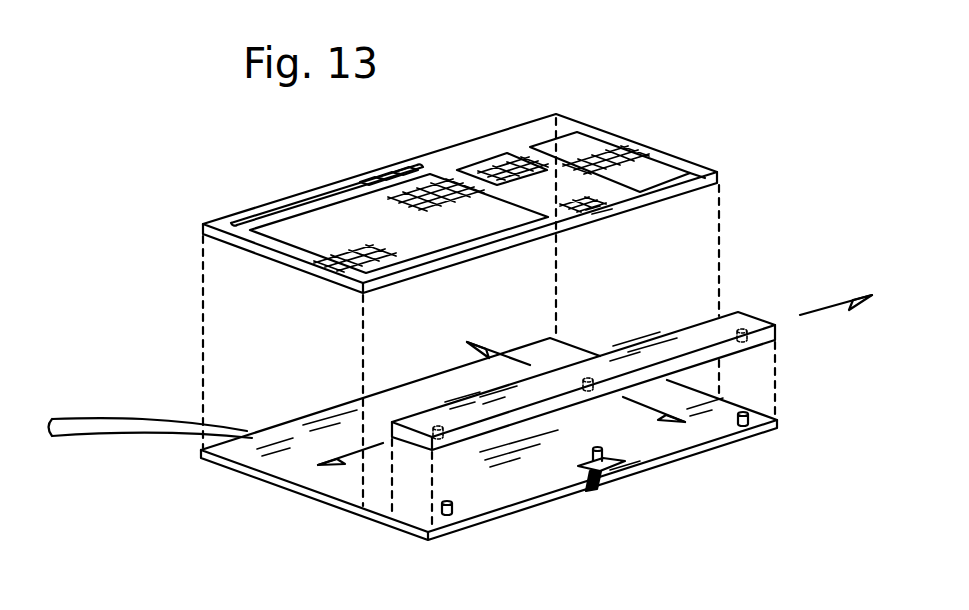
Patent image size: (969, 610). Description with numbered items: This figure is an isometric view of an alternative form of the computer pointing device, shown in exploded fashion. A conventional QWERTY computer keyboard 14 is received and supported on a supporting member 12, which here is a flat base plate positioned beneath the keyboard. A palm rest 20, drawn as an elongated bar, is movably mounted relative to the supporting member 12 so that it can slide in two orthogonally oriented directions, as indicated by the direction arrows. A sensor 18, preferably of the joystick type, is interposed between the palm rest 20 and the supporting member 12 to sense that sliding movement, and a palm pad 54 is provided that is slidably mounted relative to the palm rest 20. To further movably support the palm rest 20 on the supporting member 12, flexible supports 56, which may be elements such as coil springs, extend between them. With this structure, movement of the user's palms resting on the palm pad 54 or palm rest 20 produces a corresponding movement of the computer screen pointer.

The QWERTY computer keyboard 14 is at (184, 237).
The palm rest 20 is at (745, 322).
The supporting member 12 is at (280, 483).
The flexible supports 56 is at (760, 428).
The palm pad 54 is at (610, 462).
The sensor 18 is at (592, 473).